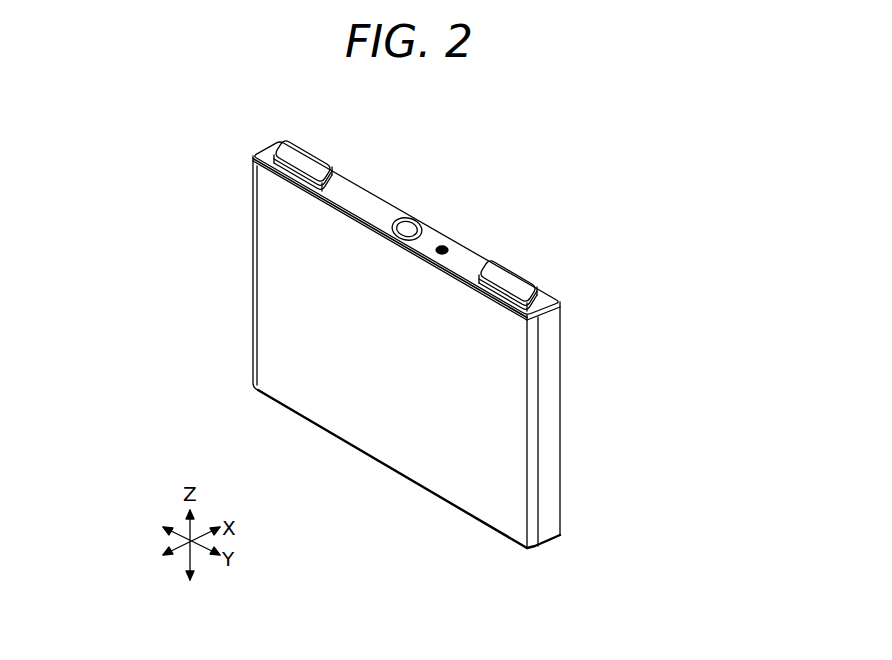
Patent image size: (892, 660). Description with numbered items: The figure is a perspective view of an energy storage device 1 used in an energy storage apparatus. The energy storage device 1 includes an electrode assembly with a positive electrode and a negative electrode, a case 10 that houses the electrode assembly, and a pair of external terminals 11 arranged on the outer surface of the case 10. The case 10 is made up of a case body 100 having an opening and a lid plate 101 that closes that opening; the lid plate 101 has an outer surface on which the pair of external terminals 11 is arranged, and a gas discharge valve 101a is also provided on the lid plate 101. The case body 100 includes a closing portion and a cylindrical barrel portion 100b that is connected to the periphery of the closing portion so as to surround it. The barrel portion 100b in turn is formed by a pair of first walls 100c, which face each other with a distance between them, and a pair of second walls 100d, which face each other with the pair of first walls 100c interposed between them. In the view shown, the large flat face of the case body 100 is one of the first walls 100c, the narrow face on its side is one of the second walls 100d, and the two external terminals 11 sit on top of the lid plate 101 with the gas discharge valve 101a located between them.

The energy storage device 1 is at (232, 148).
The case 10 is at (692, 313).
The case body 100 is at (565, 397).
The barrel portion 100b is at (677, 453).
The first wall 100c is at (487, 453).
The second wall 100d is at (553, 462).
The lid plate 101 is at (546, 307).
The gas discharge valve 101a is at (407, 227).
The external terminal 11 is at (307, 158).